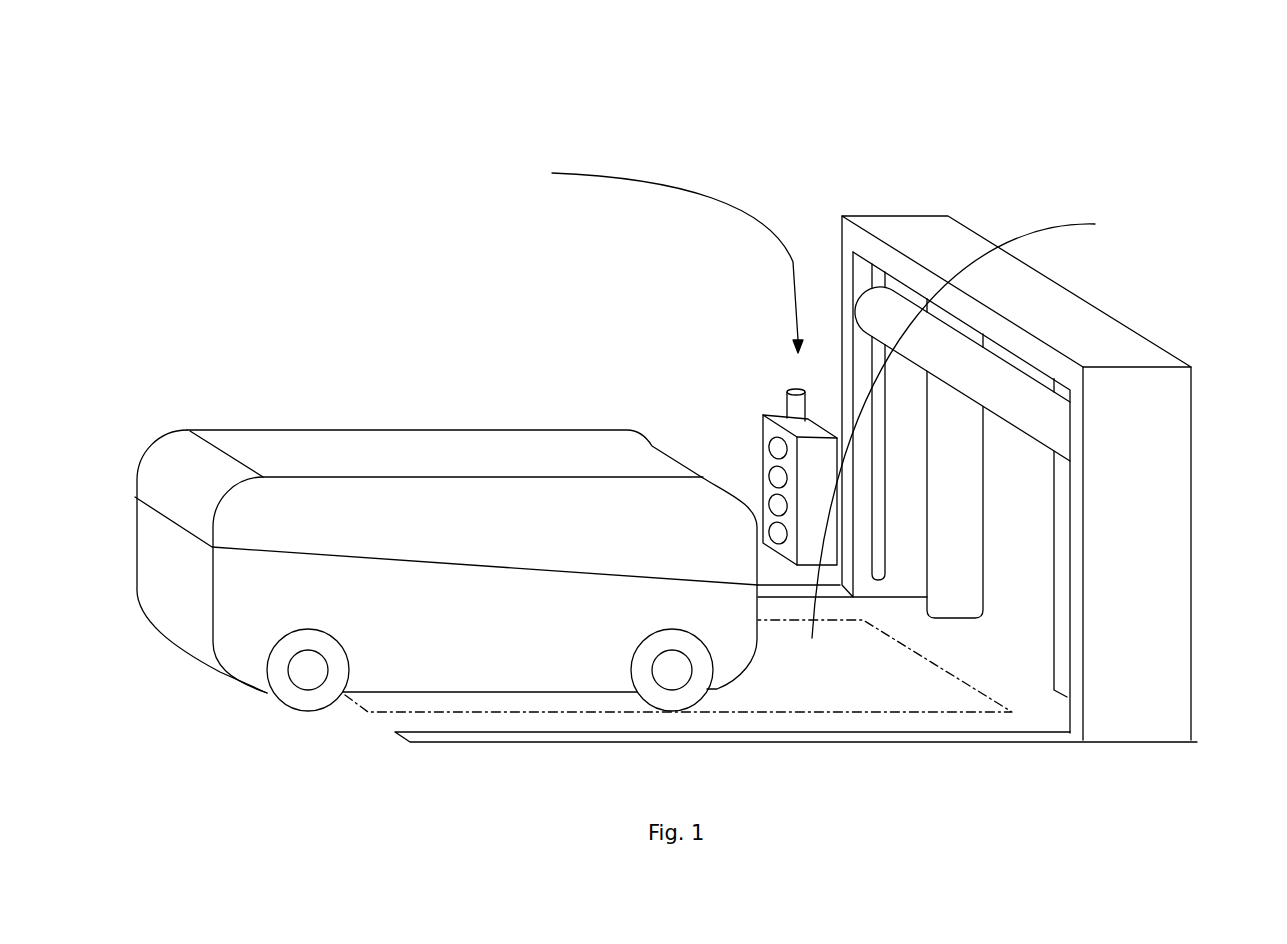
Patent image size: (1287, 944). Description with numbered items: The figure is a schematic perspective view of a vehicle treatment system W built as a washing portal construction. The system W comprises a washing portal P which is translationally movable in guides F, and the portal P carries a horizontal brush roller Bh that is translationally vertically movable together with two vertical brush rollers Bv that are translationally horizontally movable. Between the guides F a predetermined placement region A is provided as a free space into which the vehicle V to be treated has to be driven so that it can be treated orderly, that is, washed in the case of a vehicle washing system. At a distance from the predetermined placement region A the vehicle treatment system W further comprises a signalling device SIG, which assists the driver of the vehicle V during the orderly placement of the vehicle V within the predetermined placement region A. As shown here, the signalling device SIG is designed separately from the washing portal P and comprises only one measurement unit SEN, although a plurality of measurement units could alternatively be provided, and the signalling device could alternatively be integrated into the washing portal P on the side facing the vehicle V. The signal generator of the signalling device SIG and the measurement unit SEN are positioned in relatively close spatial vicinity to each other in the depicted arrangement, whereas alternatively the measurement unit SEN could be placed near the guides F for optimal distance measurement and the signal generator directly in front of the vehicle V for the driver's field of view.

The vehicle treatment system W is at (472, 202).
The vehicle V is at (365, 450).
The measurement unit SEN is at (800, 407).
The signalling device SIG is at (658, 259).
The washing portal P is at (905, 230).
The horizontal brush roller Bh is at (1027, 393).
The vertical brush rollers Bv is at (957, 423).
The predetermined placement region A is at (962, 424).
The guides F is at (847, 733).